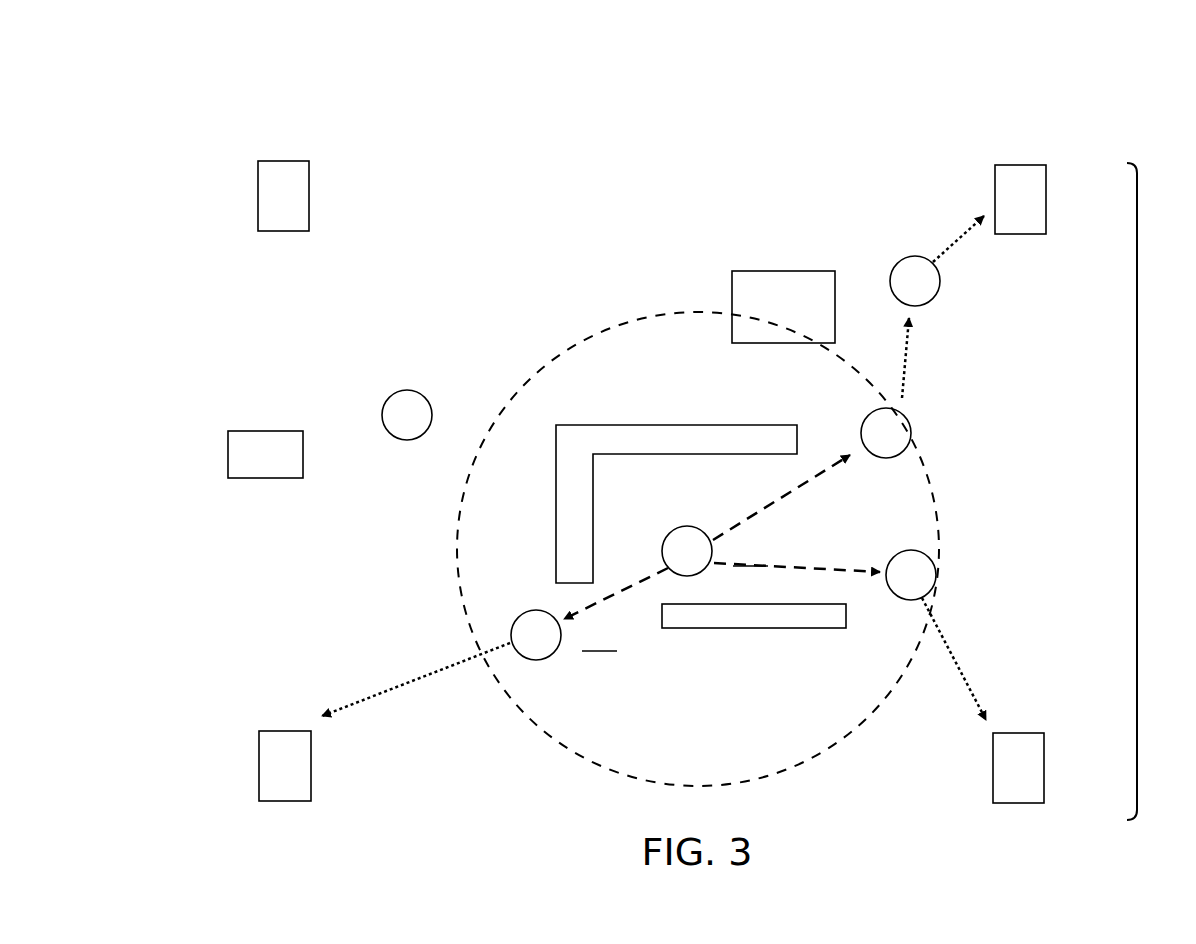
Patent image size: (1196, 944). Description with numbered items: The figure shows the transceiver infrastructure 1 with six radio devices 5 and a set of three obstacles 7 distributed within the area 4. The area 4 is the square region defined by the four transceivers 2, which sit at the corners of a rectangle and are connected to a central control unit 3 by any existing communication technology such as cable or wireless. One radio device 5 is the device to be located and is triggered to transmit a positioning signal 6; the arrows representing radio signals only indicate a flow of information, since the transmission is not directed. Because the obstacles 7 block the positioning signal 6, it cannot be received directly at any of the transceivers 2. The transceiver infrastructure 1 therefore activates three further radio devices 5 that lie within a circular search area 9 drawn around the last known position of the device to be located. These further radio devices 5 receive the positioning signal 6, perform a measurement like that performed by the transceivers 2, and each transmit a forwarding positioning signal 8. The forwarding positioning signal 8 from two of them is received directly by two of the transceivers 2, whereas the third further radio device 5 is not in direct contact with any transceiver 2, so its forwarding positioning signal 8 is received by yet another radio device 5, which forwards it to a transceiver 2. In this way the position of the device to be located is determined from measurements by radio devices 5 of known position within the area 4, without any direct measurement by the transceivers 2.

The transceiver infrastructure 1 is at (286, 122).
The transceiver 2 is at (276, 198).
The central control unit 3 is at (261, 471).
The area 4 is at (1137, 492).
The radio device 5 is at (400, 412).
The positioning signal 6 is at (803, 487).
The obstacle 7 is at (568, 471).
The forwarding positioning signal 8 is at (913, 344).
The circular search area 9 is at (847, 382).